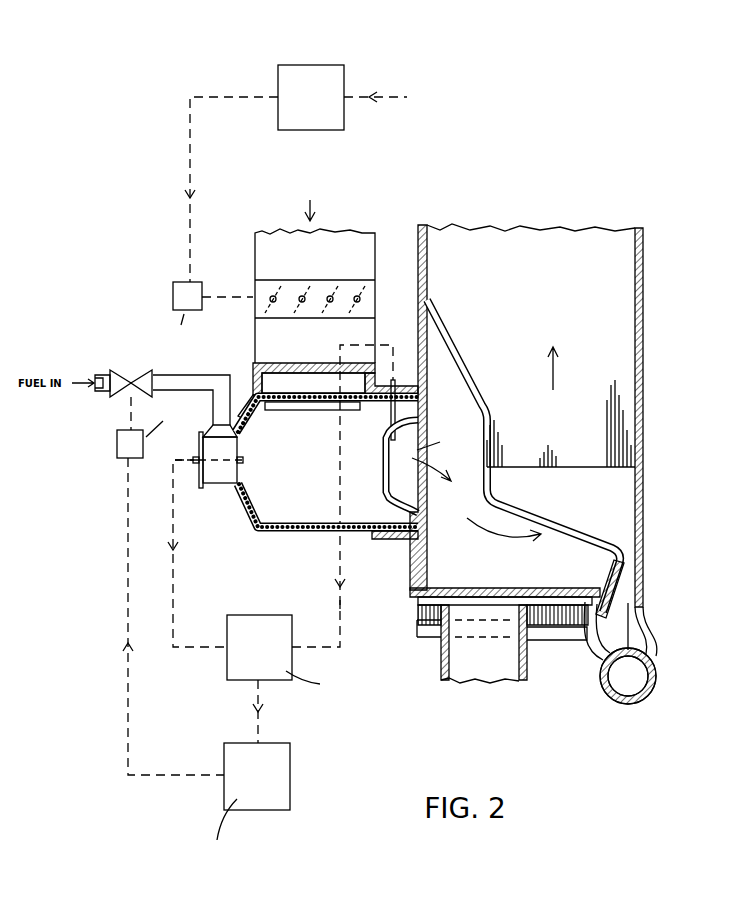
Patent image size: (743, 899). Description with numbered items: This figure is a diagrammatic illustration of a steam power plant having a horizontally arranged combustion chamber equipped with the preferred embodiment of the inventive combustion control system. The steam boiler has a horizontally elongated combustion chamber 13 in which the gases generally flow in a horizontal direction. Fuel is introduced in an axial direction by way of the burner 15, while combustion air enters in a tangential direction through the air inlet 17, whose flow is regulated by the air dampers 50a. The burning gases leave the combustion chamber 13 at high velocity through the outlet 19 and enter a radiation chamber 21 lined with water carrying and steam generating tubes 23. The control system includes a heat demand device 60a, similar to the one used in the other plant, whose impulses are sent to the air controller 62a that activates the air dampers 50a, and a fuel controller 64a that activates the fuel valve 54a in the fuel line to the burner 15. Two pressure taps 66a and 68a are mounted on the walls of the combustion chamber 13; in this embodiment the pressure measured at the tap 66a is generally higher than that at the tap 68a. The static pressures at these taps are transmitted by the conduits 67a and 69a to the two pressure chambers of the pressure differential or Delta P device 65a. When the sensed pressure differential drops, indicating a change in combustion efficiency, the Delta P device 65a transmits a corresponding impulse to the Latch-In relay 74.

The heat demand device 60a is at (324, 50).
The air controller 62a is at (178, 294).
The fuel valve 54a is at (131, 380).
The fuel controller 64a is at (117, 447).
The air dampers 50a is at (330, 313).
The conduit 69a is at (393, 352).
The air inlet 17 is at (303, 410).
The combustion chamber 13 is at (300, 472).
The pressure tap 66a is at (244, 461).
The burner 15 is at (236, 478).
The pressure tap 68a is at (387, 441).
The outlet 19 is at (441, 443).
The radiation chamber 21 is at (533, 464).
The water carrying and steam generating tubes 23 is at (503, 430).
The conduit 67a is at (176, 598).
The Delta P device 65a is at (302, 660).
The Latch-In relay 74 is at (243, 808).